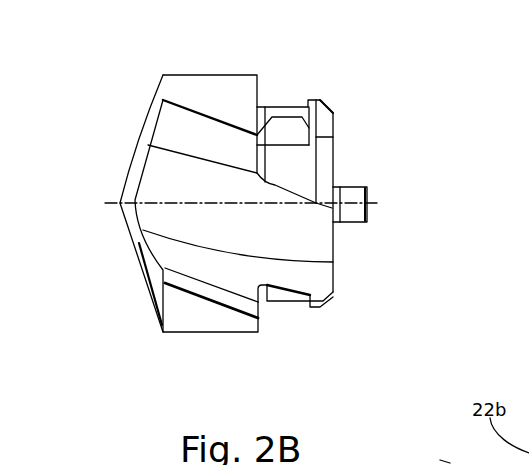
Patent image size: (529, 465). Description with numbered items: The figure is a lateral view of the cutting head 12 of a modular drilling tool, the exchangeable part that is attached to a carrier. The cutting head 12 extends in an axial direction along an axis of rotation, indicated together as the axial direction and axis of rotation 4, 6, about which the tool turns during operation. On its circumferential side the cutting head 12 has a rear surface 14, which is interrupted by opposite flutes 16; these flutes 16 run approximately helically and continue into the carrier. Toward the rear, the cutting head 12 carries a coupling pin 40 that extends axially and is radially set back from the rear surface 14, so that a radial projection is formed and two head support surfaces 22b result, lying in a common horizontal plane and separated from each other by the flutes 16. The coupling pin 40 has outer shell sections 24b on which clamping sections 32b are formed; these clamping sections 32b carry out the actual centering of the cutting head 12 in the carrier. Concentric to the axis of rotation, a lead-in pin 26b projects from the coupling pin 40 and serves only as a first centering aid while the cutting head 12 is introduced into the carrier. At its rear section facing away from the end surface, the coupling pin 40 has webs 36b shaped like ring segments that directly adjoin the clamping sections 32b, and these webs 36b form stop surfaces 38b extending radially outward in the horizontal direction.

The cutting head 12 is at (425, 90).
The rotation axis / longitudinal axis 4, 6 is at (106, 203).
The head support surfaces 22b is at (259, 107).
The flutes 16 is at (170, 250).
The rear surface 14 is at (197, 318).
The outer shell sections 24b is at (284, 123).
The webs 36b is at (310, 100).
The stop surfaces 38b is at (326, 104).
The lead-in pin 26b is at (362, 185).
The clamping sections 32b is at (281, 296).
The coupling pin 40 is at (313, 243).